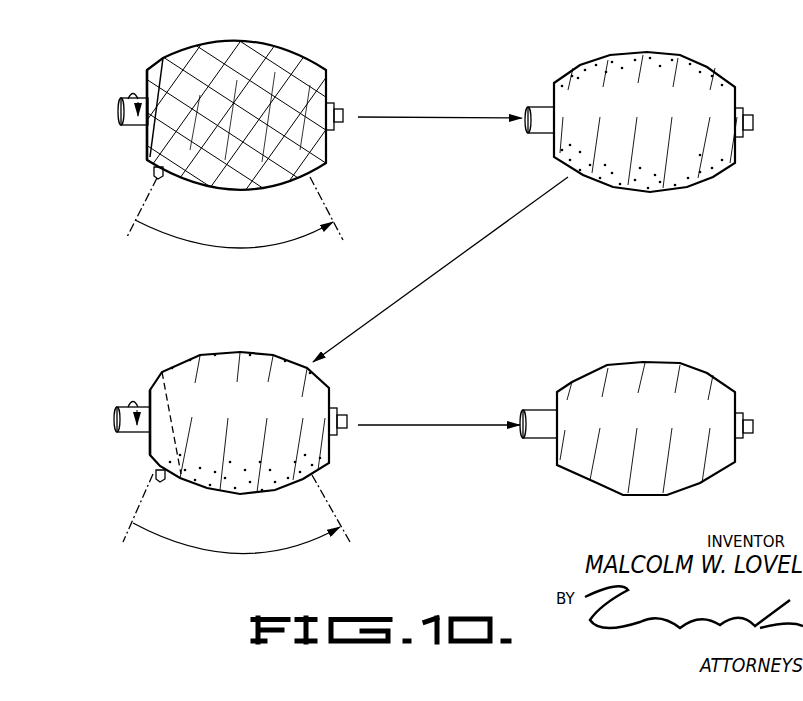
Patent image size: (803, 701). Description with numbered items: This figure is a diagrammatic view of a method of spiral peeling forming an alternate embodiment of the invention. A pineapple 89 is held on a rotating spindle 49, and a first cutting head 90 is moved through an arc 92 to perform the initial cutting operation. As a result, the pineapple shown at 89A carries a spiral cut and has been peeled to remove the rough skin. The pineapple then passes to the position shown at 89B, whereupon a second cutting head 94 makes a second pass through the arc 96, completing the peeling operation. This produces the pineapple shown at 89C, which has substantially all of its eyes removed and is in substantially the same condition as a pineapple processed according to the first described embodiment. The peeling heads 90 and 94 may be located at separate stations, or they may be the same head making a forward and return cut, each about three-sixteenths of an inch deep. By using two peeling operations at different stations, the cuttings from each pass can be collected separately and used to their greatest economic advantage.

The rotating spindle 49 is at (124, 100).
The pineapple 89 is at (322, 61).
The pineapple (after first cut) 89A is at (712, 70).
The pineapple (position for second pass) 89B is at (262, 350).
The pineapple (finished) 89C is at (708, 378).
The first cutting head 90 is at (152, 168).
The arc 92 is at (230, 246).
The second cutting head 94 is at (156, 471).
The arc 96 is at (217, 552).